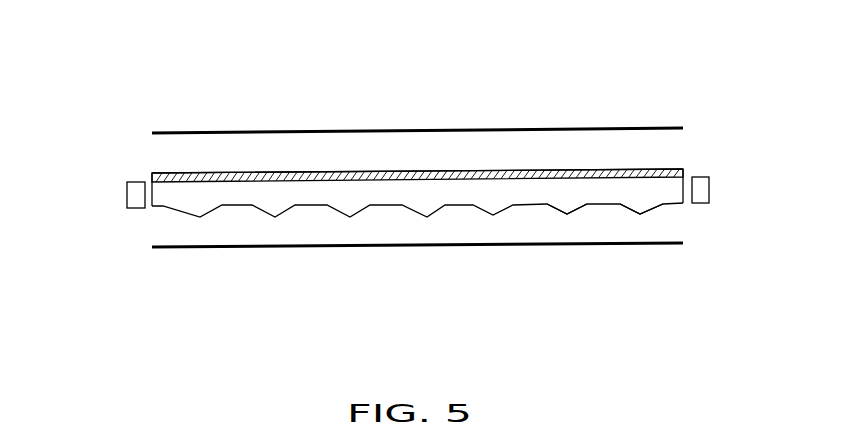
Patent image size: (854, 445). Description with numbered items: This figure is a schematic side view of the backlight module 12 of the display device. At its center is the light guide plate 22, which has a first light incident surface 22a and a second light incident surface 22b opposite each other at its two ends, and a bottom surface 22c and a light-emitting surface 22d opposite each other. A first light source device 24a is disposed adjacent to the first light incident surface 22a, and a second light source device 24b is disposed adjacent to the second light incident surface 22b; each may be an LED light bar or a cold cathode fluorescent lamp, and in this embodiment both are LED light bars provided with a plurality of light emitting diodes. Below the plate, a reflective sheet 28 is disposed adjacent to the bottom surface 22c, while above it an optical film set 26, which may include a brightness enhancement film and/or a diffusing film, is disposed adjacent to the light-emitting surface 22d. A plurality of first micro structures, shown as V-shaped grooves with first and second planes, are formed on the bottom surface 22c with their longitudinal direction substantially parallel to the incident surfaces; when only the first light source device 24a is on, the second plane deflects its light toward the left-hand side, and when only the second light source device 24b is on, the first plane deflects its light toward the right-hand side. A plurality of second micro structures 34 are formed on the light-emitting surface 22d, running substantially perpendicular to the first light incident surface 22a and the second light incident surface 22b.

The backlight module 12 is at (101, 44).
The light guide plate 22 is at (429, 221).
The first light incident surface 22a is at (684, 204).
The second light incident surface 22b is at (152, 205).
The bottom surface 22c is at (238, 205).
The light-emitting surface 22d is at (193, 176).
The first light source device 24a is at (710, 188).
The second light source device 24b is at (127, 190).
The optical film set 26 is at (420, 131).
The reflective sheet 28 is at (420, 247).
The second micro structures 34 is at (667, 169).